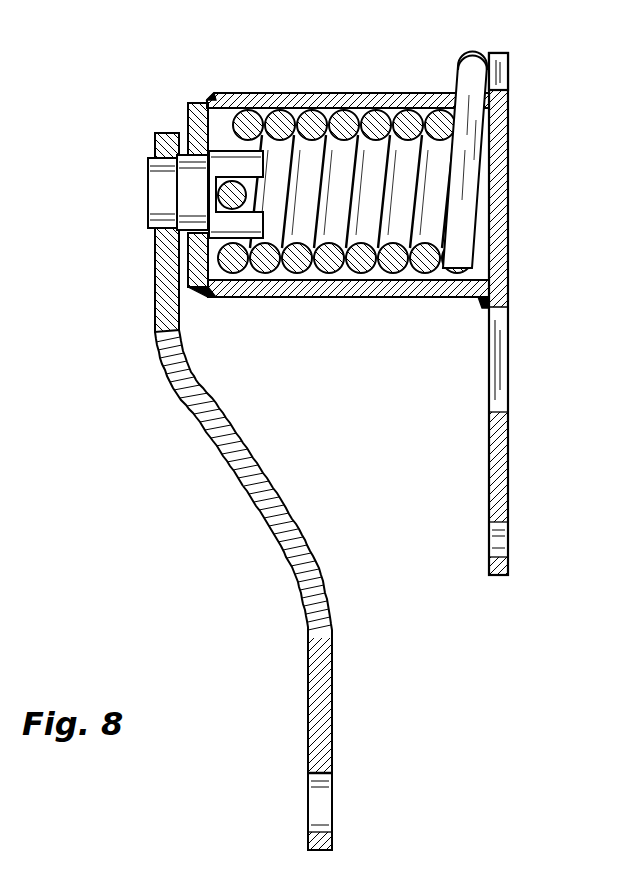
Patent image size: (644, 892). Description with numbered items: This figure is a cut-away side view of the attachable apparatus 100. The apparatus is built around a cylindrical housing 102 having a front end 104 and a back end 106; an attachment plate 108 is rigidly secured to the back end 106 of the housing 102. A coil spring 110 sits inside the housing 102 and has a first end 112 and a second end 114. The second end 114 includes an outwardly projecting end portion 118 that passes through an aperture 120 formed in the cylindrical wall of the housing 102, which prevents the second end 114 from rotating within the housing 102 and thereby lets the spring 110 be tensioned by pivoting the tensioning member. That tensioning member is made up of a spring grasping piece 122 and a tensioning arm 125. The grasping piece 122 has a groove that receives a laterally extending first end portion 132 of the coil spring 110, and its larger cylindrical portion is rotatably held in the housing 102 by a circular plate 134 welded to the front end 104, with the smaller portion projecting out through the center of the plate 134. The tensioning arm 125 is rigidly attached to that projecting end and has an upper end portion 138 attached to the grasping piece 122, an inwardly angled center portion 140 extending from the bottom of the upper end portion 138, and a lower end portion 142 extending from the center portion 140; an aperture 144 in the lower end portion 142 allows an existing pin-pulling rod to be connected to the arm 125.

The attachable apparatus 100 is at (122, 111).
The cylindrical housing 102 is at (293, 97).
The front end 104 is at (210, 98).
The back end 106 is at (495, 297).
The attachment plate 108 is at (503, 450).
The coil spring 110 is at (323, 298).
The first end 112 is at (218, 298).
The second end 114 is at (470, 185).
The outwardly projecting end portion 118 is at (484, 56).
The aperture 120 is at (458, 76).
The spring grasping piece 122 is at (193, 195).
The tensioning arm 125 is at (258, 535).
The first end portion 132 is at (220, 202).
The circular plate 134 is at (190, 112).
The upper end portion 138 is at (160, 288).
The inwardly angled center portion 140 is at (220, 452).
The lower end portion 142 is at (316, 684).
The aperture 144 is at (322, 795).